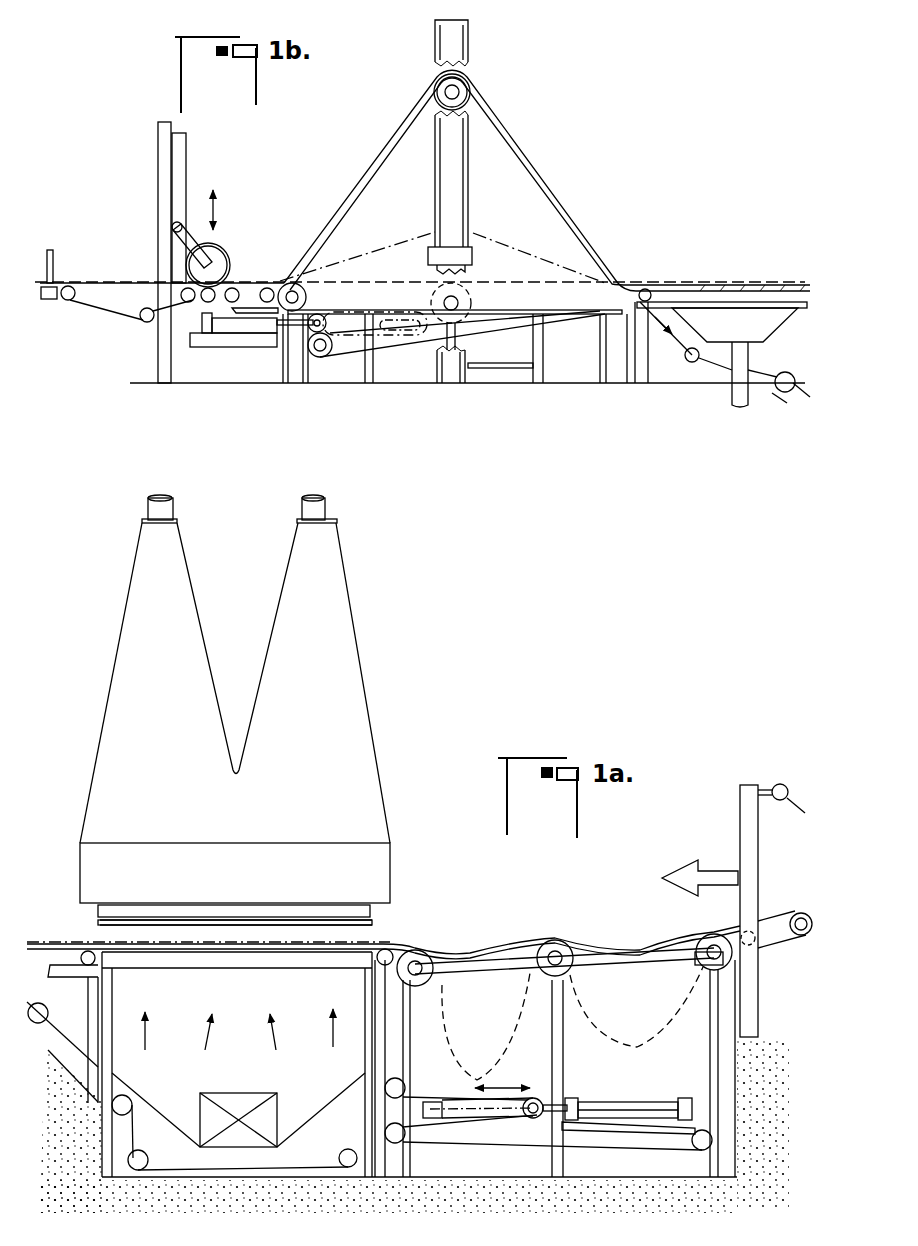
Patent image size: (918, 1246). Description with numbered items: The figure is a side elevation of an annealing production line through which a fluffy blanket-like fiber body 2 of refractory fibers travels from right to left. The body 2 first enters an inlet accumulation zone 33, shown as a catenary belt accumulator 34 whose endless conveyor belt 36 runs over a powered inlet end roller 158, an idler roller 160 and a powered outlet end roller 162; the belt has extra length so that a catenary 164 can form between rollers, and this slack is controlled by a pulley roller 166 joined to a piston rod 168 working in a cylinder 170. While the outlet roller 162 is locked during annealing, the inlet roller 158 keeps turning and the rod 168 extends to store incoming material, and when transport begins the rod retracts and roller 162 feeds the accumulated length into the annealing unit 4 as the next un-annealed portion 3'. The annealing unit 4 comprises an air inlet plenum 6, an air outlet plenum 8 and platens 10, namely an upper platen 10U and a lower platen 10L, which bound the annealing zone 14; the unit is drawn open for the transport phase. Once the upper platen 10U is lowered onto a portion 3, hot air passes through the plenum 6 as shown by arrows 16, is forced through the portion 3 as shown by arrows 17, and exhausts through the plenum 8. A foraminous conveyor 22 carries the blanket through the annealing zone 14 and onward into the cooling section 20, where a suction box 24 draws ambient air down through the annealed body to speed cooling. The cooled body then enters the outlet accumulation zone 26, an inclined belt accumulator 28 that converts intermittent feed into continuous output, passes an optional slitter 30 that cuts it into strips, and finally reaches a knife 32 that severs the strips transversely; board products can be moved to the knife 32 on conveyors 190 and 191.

In FIG. 1B, the fiber body 2 is at (113, 278).
In FIG. 1A, the fiber body 2 is at (617, 940).
In FIG. 1A, the portion 3 is at (190, 969).
In FIG. 1A, the un-annealed portion 3' is at (535, 935).
In FIG. 1A, the annealing unit 4 is at (372, 698).
In FIG. 1A, the air inlet plenum 6 is at (247, 1072).
In FIG. 1A, the air outlet plenum 8 is at (243, 834).
In FIG. 1A, the platens 10 is at (120, 942).
In FIG. 1A, the upper platen 10U is at (380, 927).
In FIG. 1A, the lower platen 10L is at (400, 933).
In FIG. 1A, the annealing zone 14 is at (350, 900).
In FIG. 1A, the arrows 16 is at (137, 1048).
In FIG. 1A, the arrows 17 is at (158, 930).
In FIG. 1B, the cooling section 20 is at (728, 253).
In FIG. 1A, the cooling section 20 is at (52, 937).
In FIG. 1B, the conveyor 22 is at (655, 290).
In FIG. 1A, the conveyor 22 is at (308, 948).
In FIG. 1B, the suction box 24 is at (750, 337).
In FIG. 1B, the outlet accumulation zone 26 is at (535, 138).
In FIG. 1B, the inclined belt accumulator 28 is at (508, 202).
In FIG. 1B, the slitter 30 is at (217, 257).
In FIG. 1B, the knife 32 is at (53, 263).
In FIG. 1A, the inlet accumulation zone 33 is at (600, 908).
In FIG. 1A, the catenary belt accumulator 34 is at (597, 1074).
In FIG. 1A, the conveyor belt 36 is at (462, 1165).
In FIG. 1A, the powered inlet end roller 158 is at (705, 982).
In FIG. 1A, the idler roller 160 is at (585, 1021).
In FIG. 1A, the powered outlet end roller 162 is at (425, 988).
In FIG. 1A, the catenary 164 is at (653, 1040).
In FIG. 1A, the pulley roller 166 is at (541, 1098).
In FIG. 1A, the piston rod 168 is at (562, 1103).
In FIG. 1A, the cylinder 170 is at (635, 1108).
In FIG. 1B, the conveyor 190 is at (257, 278).
In FIG. 1B, the conveyor 191 is at (105, 316).